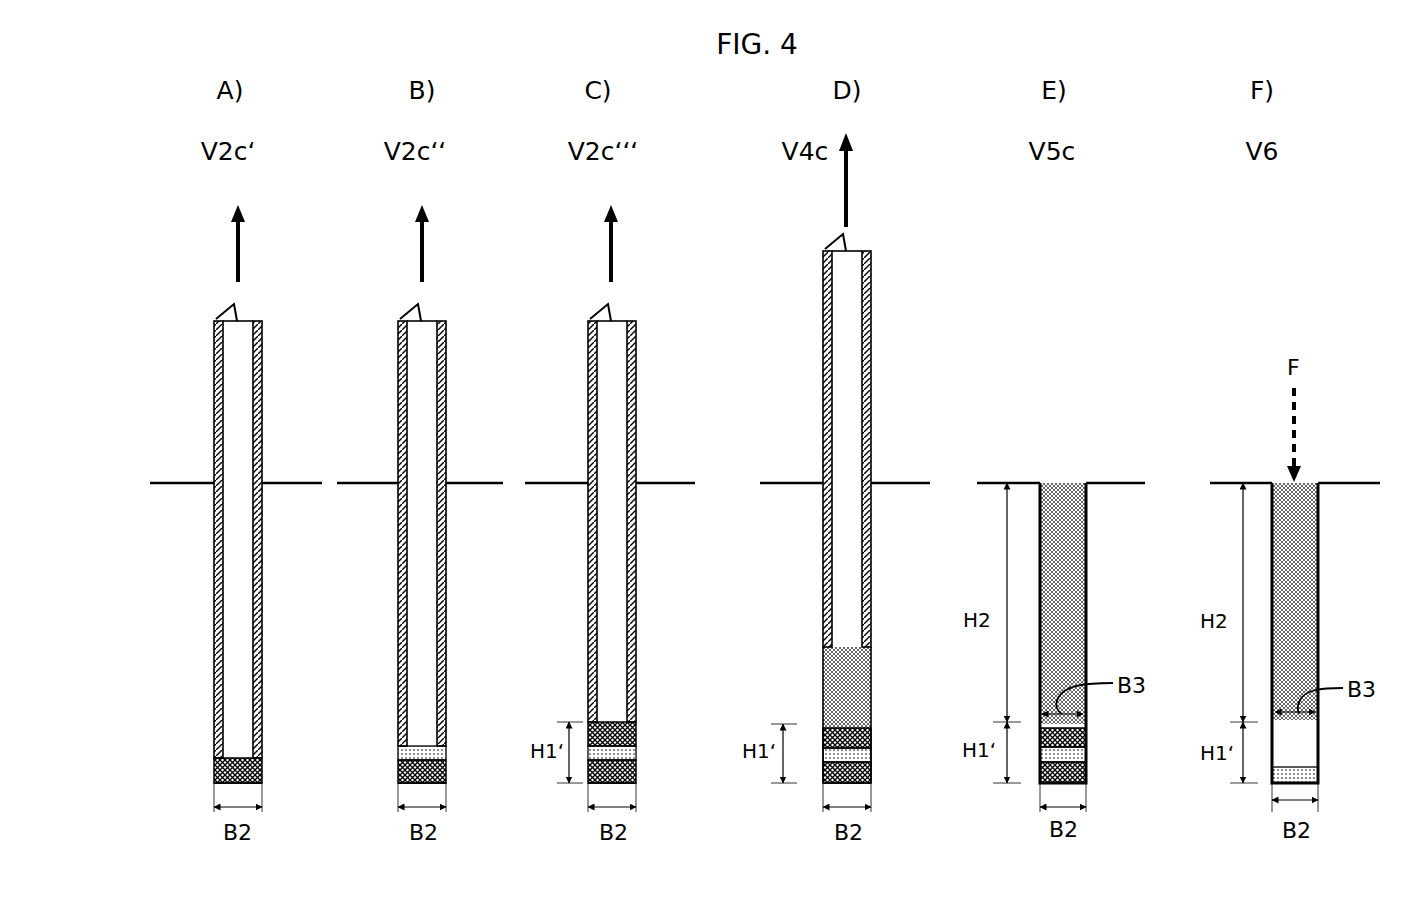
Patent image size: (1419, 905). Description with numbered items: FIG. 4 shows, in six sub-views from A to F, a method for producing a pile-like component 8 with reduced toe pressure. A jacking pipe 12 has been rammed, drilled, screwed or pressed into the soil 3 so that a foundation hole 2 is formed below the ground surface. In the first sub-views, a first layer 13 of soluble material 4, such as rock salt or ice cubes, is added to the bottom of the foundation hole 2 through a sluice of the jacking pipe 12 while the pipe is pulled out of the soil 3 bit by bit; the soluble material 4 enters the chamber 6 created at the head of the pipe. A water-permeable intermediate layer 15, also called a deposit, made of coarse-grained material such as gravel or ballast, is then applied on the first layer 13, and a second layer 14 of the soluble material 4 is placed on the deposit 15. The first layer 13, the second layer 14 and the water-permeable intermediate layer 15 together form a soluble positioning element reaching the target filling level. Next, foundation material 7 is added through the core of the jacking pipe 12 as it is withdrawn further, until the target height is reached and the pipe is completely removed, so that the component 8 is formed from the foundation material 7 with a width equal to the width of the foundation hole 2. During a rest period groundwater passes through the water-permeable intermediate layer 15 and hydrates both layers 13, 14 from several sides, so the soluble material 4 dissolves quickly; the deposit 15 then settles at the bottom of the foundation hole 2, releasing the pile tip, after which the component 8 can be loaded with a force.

The foundation hole 2 is at (262, 661).
The soil 3 is at (286, 503).
The soluble material 4 is at (280, 772).
The chamber 6 is at (278, 757).
The foundation material 7 is at (837, 660).
The component 8 is at (1067, 600).
The jacking pipe 12 is at (214, 452).
The first layer 13 is at (216, 782).
The second layer 14 is at (605, 722).
The water-permeable intermediate layer 15 is at (446, 753).